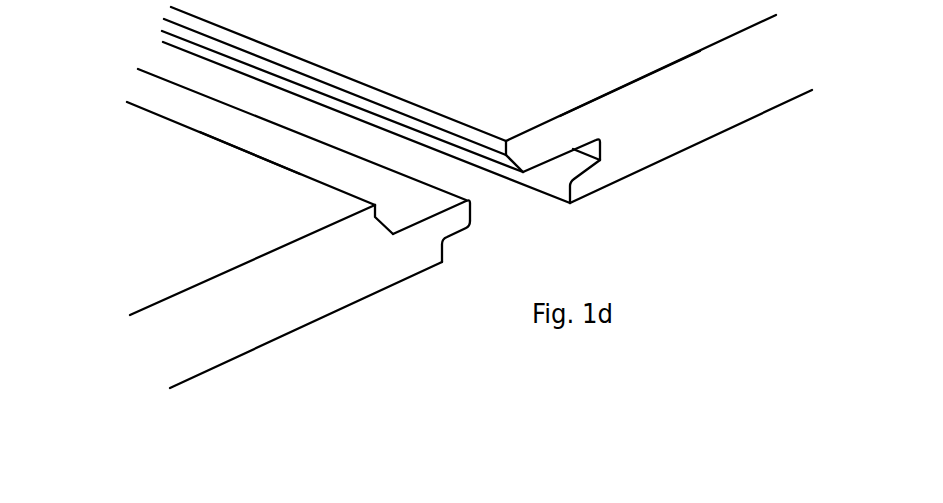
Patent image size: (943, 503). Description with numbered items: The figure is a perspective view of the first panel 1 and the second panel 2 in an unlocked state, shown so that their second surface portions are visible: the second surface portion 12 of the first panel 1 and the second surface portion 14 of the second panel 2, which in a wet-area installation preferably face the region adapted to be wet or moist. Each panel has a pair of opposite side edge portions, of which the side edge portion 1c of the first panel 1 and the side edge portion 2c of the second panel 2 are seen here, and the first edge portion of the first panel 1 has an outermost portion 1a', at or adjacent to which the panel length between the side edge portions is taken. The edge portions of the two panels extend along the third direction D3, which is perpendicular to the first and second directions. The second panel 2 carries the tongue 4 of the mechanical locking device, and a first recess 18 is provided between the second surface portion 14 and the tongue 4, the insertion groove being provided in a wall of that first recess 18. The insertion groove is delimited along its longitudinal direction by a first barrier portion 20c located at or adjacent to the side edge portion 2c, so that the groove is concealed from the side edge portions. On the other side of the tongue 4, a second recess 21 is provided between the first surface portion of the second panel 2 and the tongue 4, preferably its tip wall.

The first panel 1 is at (396, 58).
The outermost portion of the first edge portion 1a' is at (351, 111).
The side edge portion 1c is at (740, 116).
The second surface portion 12 is at (460, 85).
The second panel 2 is at (229, 190).
The side edge portion 2c is at (353, 296).
The second surface portion 14 is at (175, 207).
The first recess 18 is at (388, 206).
The first barrier portion 20c is at (425, 207).
The second recess 21 is at (470, 251).
The tongue 4 is at (488, 216).
The third direction D3 is at (485, 188).